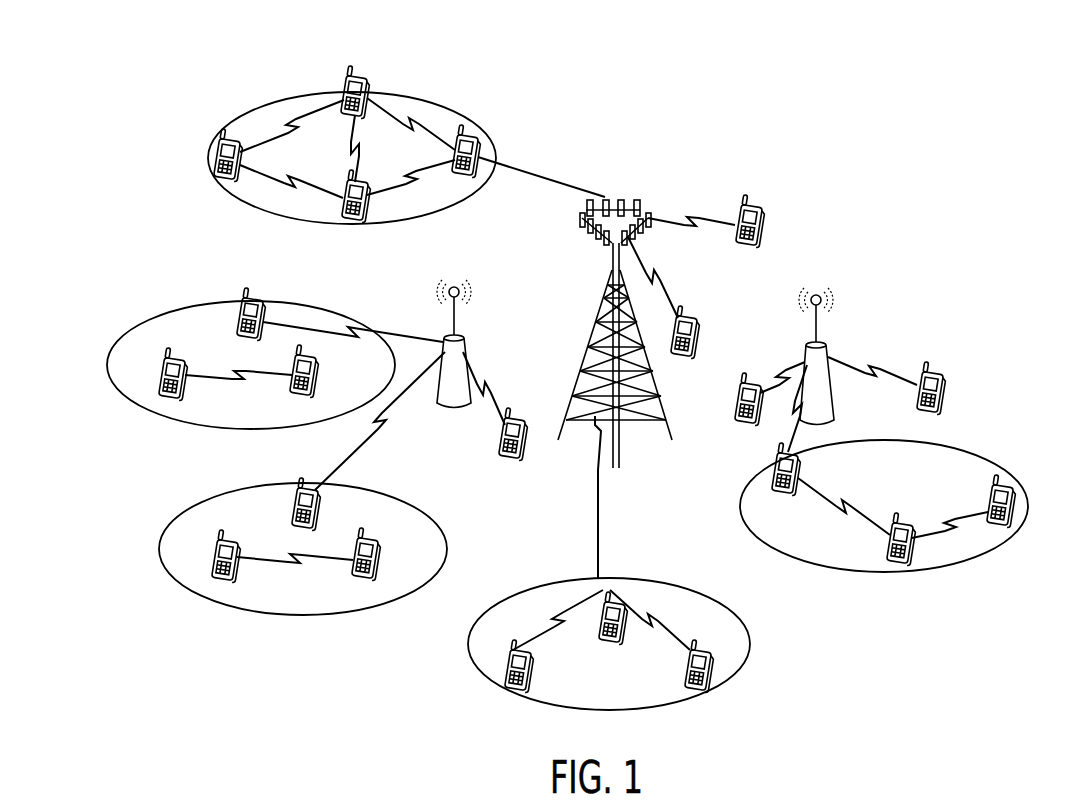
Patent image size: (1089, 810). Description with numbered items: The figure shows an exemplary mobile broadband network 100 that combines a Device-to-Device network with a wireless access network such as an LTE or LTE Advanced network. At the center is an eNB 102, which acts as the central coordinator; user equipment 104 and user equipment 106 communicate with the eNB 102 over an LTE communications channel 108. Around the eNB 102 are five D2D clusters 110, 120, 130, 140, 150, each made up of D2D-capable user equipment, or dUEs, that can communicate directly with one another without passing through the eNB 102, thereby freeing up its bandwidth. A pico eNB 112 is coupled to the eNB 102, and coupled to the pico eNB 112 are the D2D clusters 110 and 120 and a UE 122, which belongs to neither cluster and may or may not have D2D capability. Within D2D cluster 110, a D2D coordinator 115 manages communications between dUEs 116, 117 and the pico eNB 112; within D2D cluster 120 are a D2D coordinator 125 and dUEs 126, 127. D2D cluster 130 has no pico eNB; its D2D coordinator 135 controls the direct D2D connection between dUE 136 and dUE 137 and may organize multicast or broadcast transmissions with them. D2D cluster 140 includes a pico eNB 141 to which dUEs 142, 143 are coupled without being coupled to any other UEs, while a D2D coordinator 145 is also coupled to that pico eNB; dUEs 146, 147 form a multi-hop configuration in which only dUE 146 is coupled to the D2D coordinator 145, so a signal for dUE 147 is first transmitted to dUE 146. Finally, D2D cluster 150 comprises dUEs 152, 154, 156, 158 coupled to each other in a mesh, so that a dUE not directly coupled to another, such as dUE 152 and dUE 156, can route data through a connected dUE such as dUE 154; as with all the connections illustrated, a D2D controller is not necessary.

The mobile broadband network 100 is at (818, 109).
The eNB 102 is at (636, 200).
The user equipment 104 is at (756, 208).
The user equipment 106 is at (692, 320).
The LTE communications channel 108 is at (700, 215).
The D2D cluster 110 is at (107, 370).
The pico eNB 112 is at (472, 288).
The D2D coordinator 115 is at (258, 300).
The dUE 116 is at (178, 358).
The dUE 117 is at (318, 378).
The D2D cluster 120 is at (165, 572).
The UE 122 is at (522, 460).
The D2D coordinator 125 is at (292, 508).
The dUE 126 is at (238, 578).
The dUE 127 is at (380, 563).
The D2D cluster 130 is at (700, 700).
The D2D coordinator 135 is at (598, 637).
The dUE 136 is at (530, 680).
The dUE 137 is at (710, 665).
The D2D cluster 140 is at (1010, 543).
The pico eNB 141 is at (840, 297).
The dUE 142 is at (740, 415).
The dUE 143 is at (946, 392).
The D2D coordinator 145 is at (800, 478).
The dUE 146 is at (898, 568).
The dUE 147 is at (1014, 505).
The D2D cluster 150 is at (240, 118).
The dUE 152 is at (476, 140).
The dUE 154 is at (357, 84).
The dUE 156 is at (217, 160).
The dUE 158 is at (370, 218).